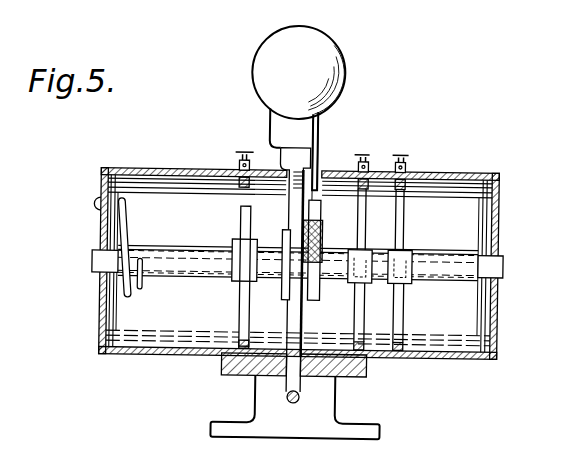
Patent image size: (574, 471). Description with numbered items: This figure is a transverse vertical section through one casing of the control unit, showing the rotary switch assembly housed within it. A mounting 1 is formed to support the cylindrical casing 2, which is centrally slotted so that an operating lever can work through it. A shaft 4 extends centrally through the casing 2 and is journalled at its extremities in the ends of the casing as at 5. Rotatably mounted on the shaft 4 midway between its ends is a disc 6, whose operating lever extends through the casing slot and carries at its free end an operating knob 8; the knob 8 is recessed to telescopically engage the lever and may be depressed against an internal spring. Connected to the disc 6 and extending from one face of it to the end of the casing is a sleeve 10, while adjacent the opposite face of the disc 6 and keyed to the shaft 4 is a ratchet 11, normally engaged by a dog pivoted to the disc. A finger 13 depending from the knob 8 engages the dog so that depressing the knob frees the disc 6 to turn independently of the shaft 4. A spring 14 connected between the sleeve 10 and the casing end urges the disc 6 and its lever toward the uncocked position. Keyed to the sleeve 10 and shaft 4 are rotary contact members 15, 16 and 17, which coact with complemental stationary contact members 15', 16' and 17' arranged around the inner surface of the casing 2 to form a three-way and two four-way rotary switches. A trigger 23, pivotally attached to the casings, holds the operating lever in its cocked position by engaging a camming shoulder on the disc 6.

The mounting 1 is at (339, 405).
The cylindrical casing 2 is at (259, 369).
The shaft 4 is at (501, 255).
The journal 5 is at (503, 275).
The disc 6 is at (303, 331).
The operating knob 8 is at (333, 50).
The sleeve 10 is at (184, 249).
The ratchet 11 is at (322, 249).
The finger 13 is at (316, 168).
The spring 14 is at (131, 211).
The rotary contact member 15 is at (254, 249).
The stationary contact member 15' is at (258, 340).
The rotary contact member 16 is at (371, 219).
The stationary contact member 16' is at (374, 317).
The rotary contact member 17 is at (410, 219).
The stationary contact member 17' is at (413, 317).
The trigger 23 is at (287, 394).